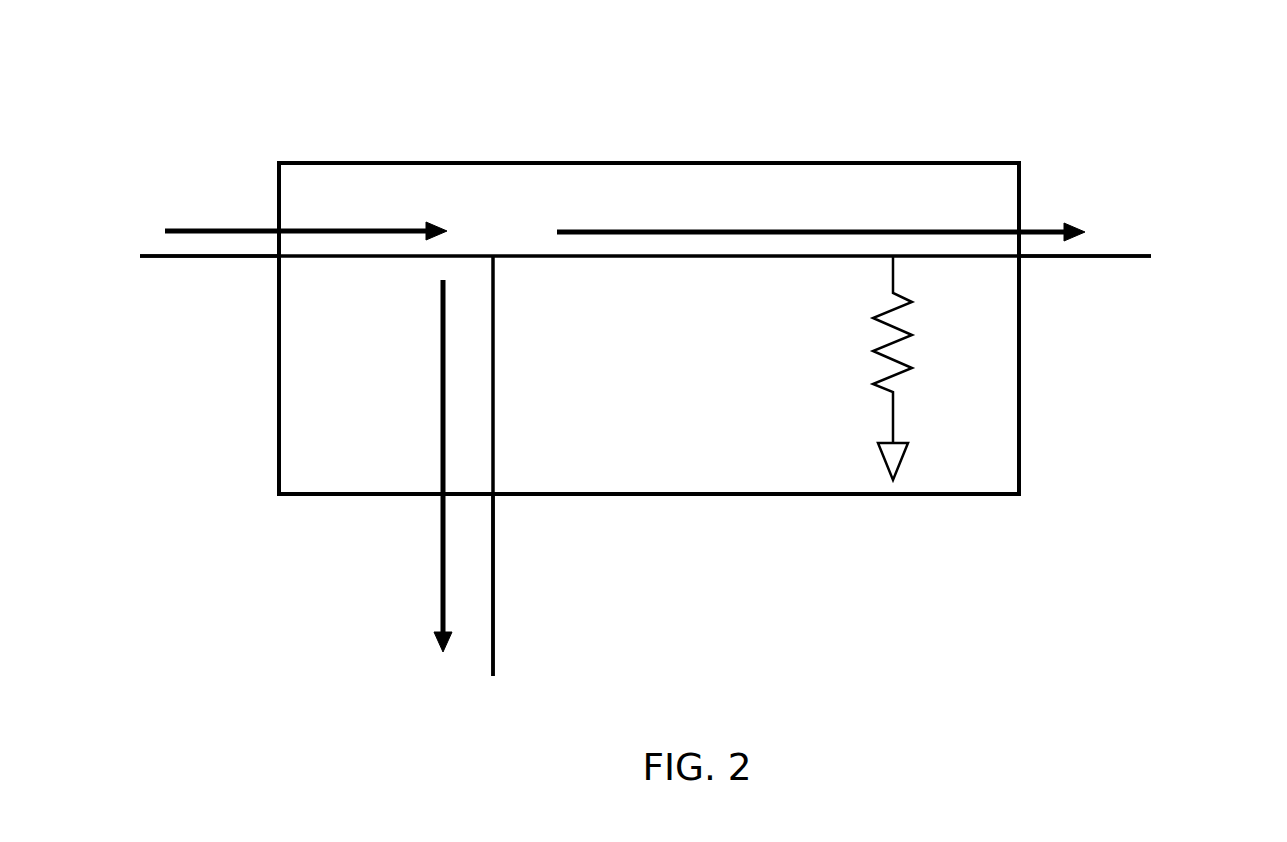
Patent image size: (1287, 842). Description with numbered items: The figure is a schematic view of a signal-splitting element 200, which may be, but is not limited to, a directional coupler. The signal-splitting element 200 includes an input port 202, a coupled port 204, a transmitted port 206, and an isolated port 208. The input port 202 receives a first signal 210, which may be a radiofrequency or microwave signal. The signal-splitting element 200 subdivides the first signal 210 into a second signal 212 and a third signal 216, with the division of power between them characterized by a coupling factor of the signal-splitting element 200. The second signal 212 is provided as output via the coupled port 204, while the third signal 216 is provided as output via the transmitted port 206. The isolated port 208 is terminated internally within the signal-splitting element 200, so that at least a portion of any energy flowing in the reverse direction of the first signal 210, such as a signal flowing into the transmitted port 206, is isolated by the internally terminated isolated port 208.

The signal-splitting element 200 is at (645, 419).
The input port 202 is at (262, 264).
The coupled port 204 is at (502, 503).
The transmitted port 206 is at (1052, 268).
The isolated port 208 is at (866, 450).
The first signal 210 is at (237, 210).
The second signal 212 is at (426, 570).
The third signal 216 is at (854, 212).